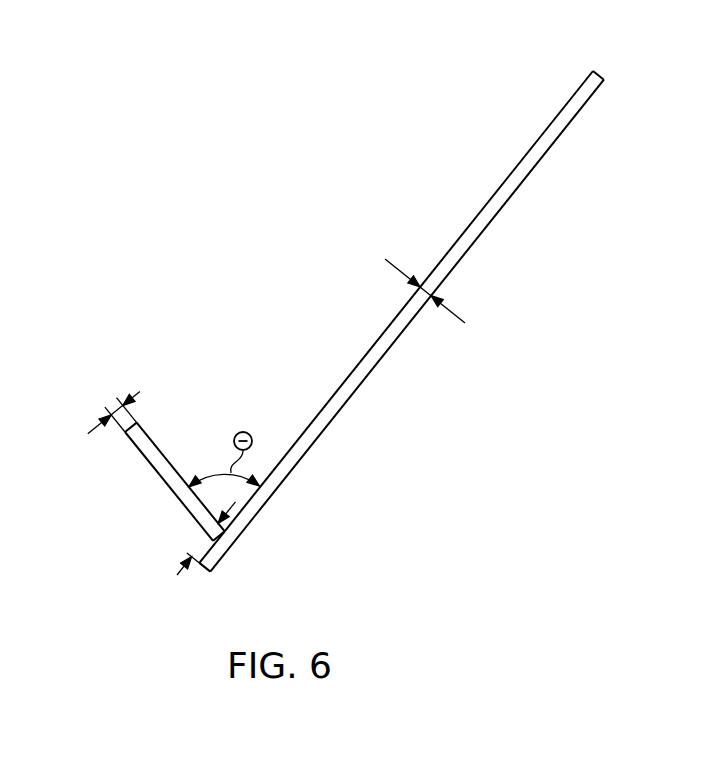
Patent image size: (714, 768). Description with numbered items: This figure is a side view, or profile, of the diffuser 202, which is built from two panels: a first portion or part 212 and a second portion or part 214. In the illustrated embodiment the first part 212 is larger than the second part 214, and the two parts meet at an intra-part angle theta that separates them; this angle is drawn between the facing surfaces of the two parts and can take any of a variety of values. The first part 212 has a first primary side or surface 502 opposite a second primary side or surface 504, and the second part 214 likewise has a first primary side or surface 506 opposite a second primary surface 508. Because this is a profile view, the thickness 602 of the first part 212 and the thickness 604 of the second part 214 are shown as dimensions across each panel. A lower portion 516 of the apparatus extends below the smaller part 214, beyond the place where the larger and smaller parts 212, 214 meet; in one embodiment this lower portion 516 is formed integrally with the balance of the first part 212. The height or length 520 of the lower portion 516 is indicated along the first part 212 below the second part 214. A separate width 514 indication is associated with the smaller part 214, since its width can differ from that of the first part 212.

The diffuser 202 is at (206, 372).
The first part 212 is at (323, 437).
The second part 214 is at (136, 445).
The first primary surface 502 is at (351, 372).
The second primary surface 504 is at (481, 237).
The first primary surface 506 is at (148, 434).
The second primary surface 508 is at (164, 480).
The width 514 is at (236, 543).
The lower portion 516 is at (213, 570).
The height of the lower portion 520 is at (198, 548).
The thickness of the first part 602 is at (434, 291).
The thickness of the second part 604 is at (118, 402).